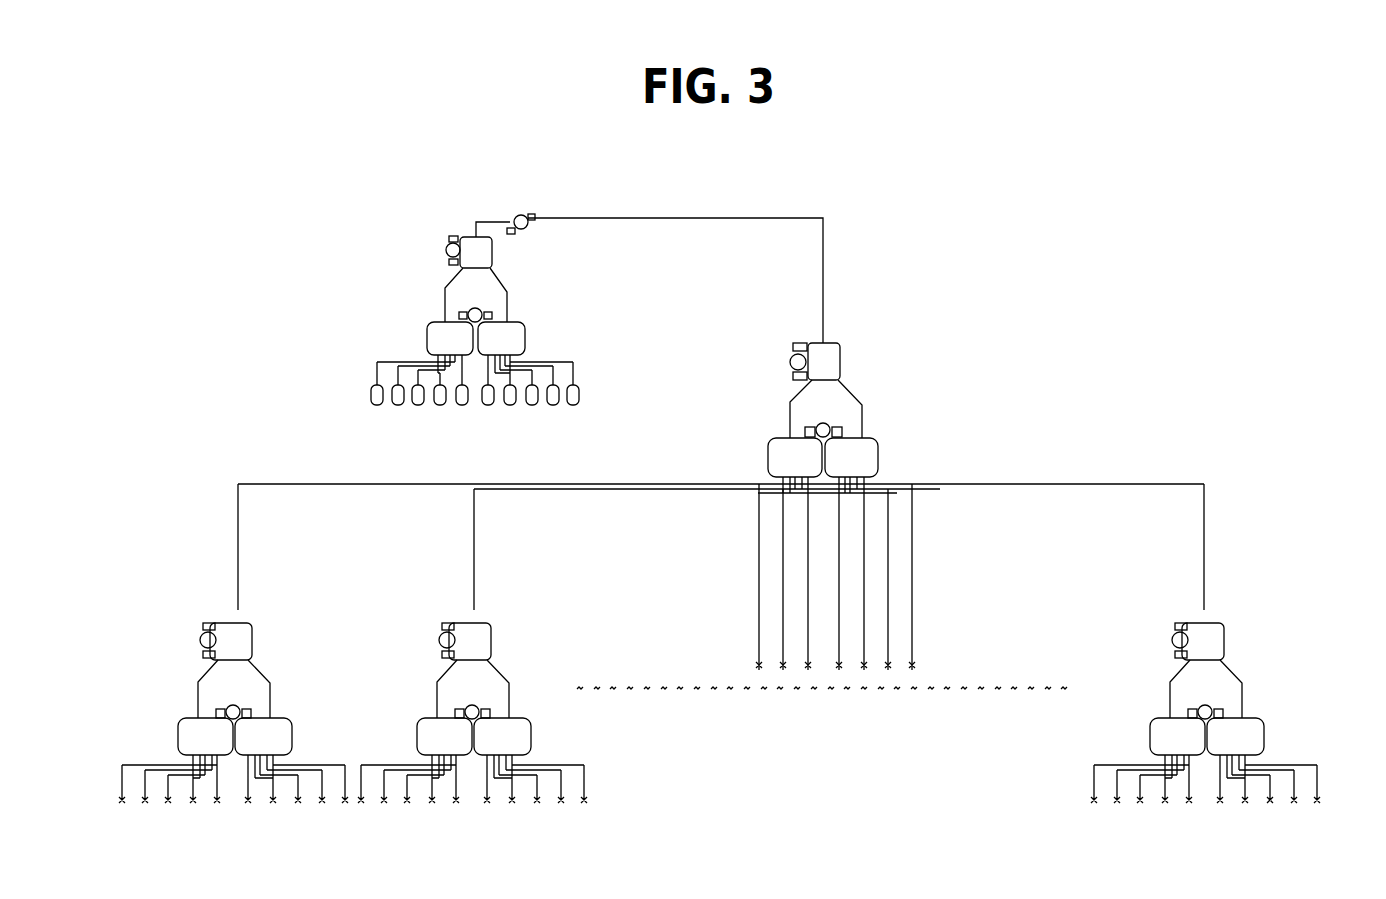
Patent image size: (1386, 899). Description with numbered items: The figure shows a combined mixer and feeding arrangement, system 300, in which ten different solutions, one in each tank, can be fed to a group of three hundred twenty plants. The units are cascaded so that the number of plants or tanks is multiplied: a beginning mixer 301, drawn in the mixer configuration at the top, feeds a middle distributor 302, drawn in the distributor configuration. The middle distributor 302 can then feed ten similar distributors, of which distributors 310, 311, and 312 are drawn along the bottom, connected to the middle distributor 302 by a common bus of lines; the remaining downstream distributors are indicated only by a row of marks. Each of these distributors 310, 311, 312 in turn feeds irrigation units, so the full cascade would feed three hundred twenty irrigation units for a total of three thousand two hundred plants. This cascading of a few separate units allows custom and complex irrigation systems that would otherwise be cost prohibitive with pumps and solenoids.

The system 300 is at (1170, 290).
The beginning mixer 301 is at (428, 273).
The middle distributor 302 is at (863, 373).
The distributor 310 is at (208, 607).
The distributor 311 is at (432, 610).
The distributor 312 is at (1222, 610).